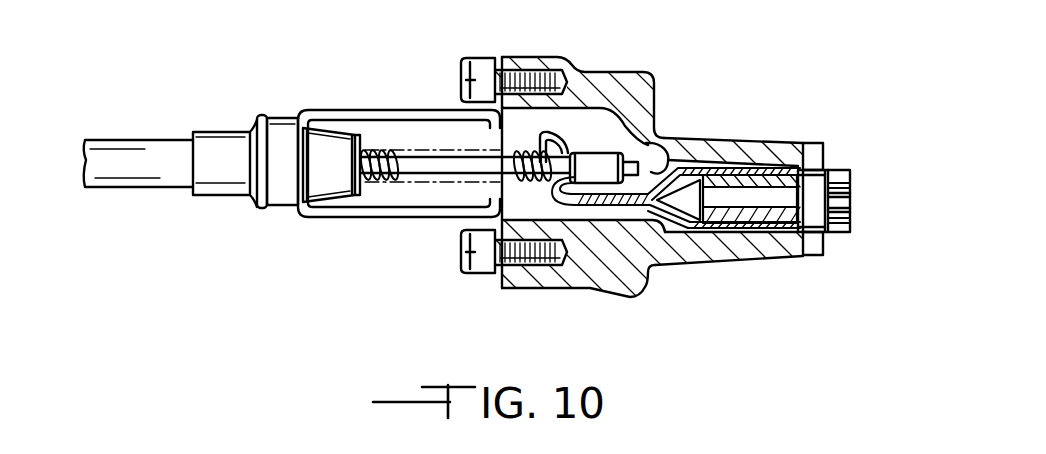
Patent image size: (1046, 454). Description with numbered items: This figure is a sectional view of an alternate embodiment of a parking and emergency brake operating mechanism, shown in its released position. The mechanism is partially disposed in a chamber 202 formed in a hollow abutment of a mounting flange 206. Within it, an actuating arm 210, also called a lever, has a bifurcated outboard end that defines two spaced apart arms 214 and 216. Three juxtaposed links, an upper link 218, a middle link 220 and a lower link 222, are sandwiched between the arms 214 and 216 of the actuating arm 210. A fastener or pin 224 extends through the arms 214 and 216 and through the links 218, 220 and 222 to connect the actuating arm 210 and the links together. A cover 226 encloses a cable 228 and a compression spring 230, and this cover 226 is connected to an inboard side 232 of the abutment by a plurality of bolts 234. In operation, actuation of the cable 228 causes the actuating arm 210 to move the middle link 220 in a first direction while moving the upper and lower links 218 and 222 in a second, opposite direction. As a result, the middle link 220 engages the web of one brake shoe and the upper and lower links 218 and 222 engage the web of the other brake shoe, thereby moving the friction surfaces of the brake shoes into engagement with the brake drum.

The chamber 202 is at (663, 143).
The mounting flange 206 is at (703, 263).
The actuating arm 210 is at (603, 210).
The arm 214 is at (843, 170).
The arm 216 is at (843, 233).
The upper link 218 is at (853, 188).
The middle link 220 is at (853, 202).
The lower link 222 is at (853, 220).
The pin 224 is at (810, 143).
The cover 226 is at (323, 220).
The cable 228 is at (412, 175).
The compression spring 230 is at (382, 147).
The inboard side 232 is at (463, 82).
The bolts 234 is at (487, 287).